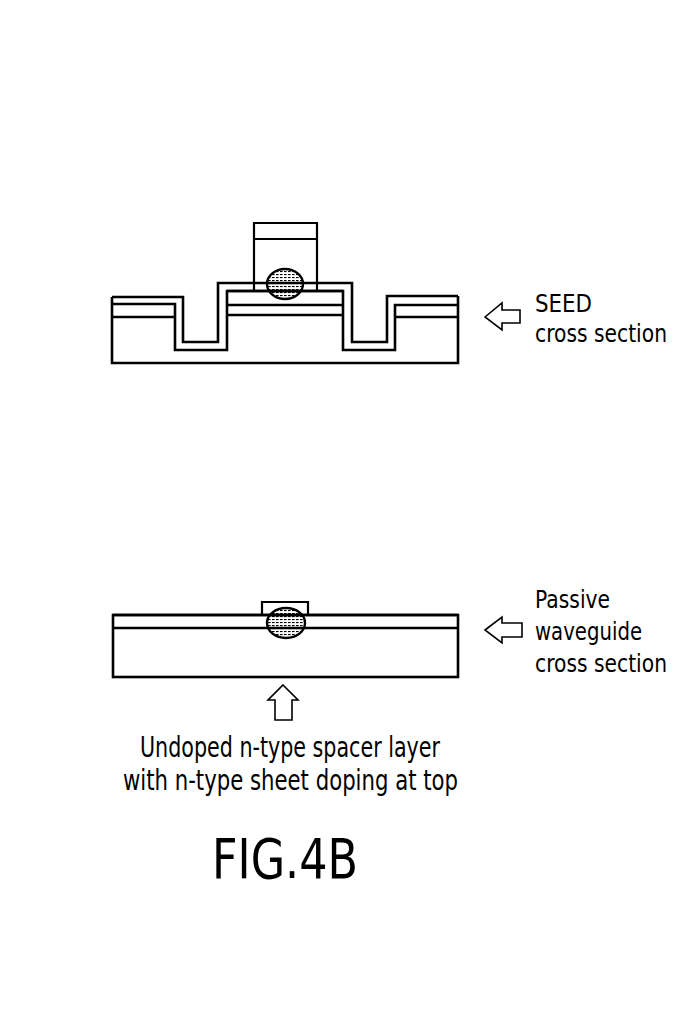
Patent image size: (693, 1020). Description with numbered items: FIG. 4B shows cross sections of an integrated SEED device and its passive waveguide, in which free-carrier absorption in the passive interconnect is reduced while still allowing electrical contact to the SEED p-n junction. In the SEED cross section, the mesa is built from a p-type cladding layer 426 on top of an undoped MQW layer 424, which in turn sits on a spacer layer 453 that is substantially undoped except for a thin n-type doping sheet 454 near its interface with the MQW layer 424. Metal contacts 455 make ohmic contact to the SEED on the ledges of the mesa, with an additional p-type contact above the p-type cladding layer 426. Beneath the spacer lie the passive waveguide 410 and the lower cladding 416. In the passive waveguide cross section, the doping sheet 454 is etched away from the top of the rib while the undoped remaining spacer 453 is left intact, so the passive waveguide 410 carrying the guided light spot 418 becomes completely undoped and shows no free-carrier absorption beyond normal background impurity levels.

The p-type cladding layer 426 is at (303, 247).
The undoped MQW layer 424 is at (311, 284).
The n-type doping sheet 454 is at (318, 291).
The undoped spacer layer 453 is at (330, 297).
The metal contacts 455 is at (275, 223).
The Guided light spot 418 is at (280, 298).
The passive waveguide 410 is at (313, 620).
The Undoped lower clad 416 is at (318, 640).